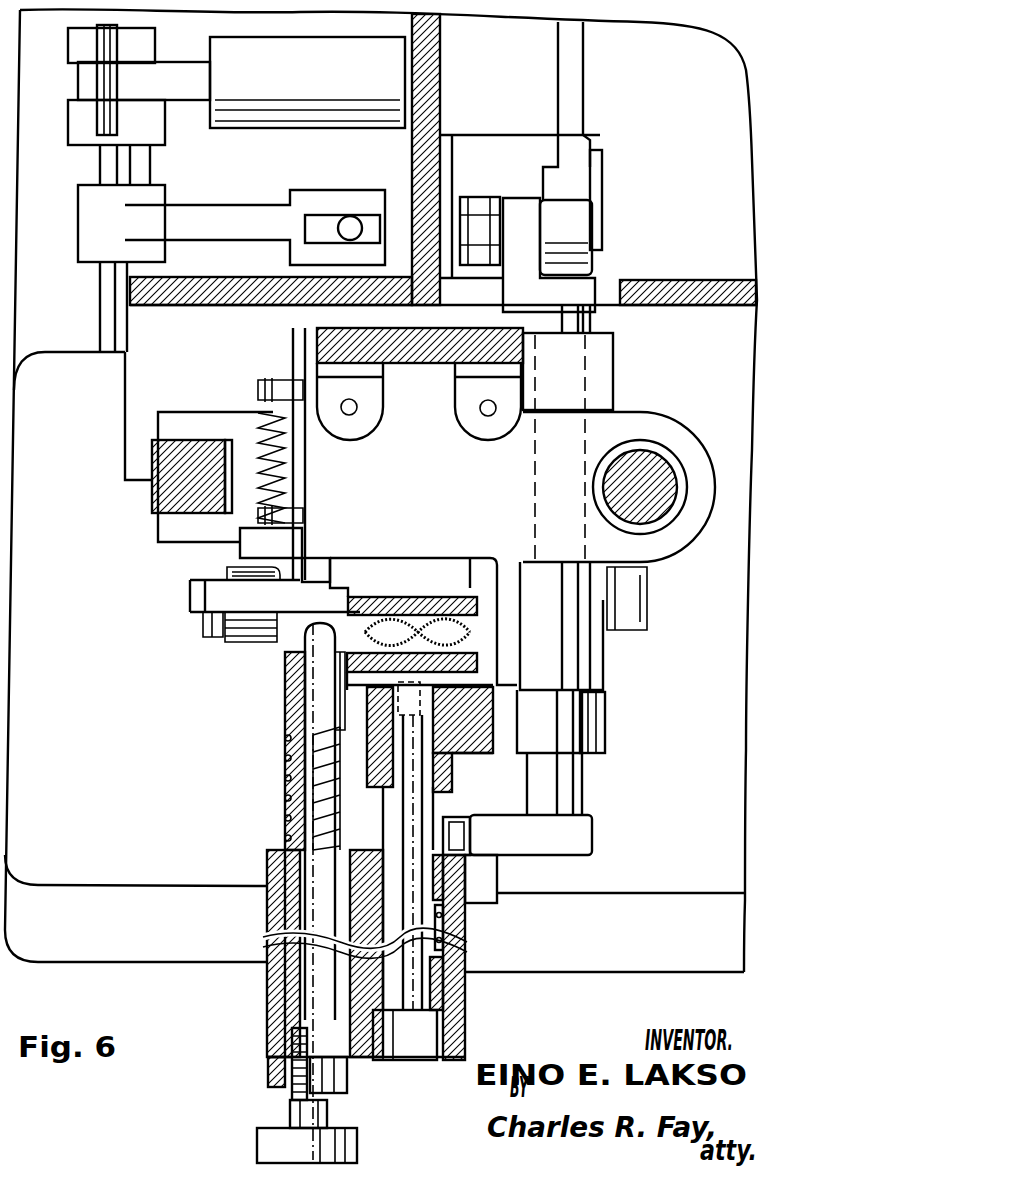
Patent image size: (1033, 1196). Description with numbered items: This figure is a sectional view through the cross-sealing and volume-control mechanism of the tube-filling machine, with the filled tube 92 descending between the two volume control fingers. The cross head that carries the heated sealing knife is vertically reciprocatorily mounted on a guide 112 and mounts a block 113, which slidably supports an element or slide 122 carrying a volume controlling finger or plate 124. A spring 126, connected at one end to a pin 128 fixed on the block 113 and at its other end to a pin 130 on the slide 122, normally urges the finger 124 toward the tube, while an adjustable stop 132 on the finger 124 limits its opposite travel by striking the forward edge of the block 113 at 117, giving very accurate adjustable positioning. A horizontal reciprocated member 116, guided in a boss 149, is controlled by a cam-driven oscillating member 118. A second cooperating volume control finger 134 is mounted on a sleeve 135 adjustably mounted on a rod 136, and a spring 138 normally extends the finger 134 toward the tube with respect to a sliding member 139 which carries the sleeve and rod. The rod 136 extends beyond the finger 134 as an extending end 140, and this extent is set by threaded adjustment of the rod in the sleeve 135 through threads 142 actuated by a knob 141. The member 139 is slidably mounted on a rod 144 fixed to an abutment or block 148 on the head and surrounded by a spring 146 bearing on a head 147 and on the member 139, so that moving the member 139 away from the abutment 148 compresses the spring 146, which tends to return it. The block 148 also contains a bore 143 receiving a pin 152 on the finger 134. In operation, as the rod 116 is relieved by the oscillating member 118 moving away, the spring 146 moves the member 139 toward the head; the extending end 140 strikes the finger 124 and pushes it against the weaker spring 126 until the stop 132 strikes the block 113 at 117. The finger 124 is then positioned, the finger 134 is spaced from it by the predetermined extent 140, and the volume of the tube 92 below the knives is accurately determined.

The oscillating member 118 is at (578, 90).
The horizontal reciprocated member 116 is at (577, 780).
The guide 112 is at (655, 515).
The boss 149 is at (598, 720).
The block 113 is at (327, 390).
The forward edge of block 117 is at (240, 545).
The pin 128 is at (258, 515).
The pin 130 is at (275, 388).
The spring 126 is at (258, 430).
The slide 122 is at (350, 568).
The volume controlling finger 124 is at (450, 600).
The filled tube 92 is at (400, 618).
The second volume control finger 134 is at (477, 662).
The adjustable stop 132 is at (225, 641).
The extending end of rod 140 is at (300, 640).
The rod 136 is at (307, 743).
The spring 138 is at (285, 790).
The pin 152 is at (427, 678).
The abutment 148 is at (482, 742).
The bore 143 is at (450, 780).
The sleeve 135 is at (267, 980).
The rod 144 is at (467, 965).
The spring 146 is at (443, 925).
The head 147 is at (443, 985).
The sliding member 139 is at (440, 1013).
The threads 142 is at (292, 1103).
The knob 141 is at (348, 1135).